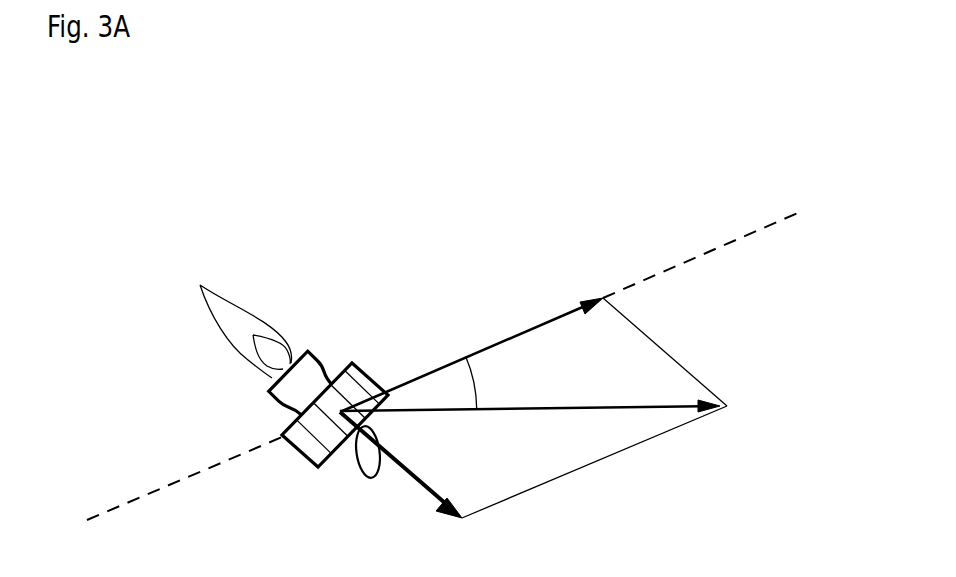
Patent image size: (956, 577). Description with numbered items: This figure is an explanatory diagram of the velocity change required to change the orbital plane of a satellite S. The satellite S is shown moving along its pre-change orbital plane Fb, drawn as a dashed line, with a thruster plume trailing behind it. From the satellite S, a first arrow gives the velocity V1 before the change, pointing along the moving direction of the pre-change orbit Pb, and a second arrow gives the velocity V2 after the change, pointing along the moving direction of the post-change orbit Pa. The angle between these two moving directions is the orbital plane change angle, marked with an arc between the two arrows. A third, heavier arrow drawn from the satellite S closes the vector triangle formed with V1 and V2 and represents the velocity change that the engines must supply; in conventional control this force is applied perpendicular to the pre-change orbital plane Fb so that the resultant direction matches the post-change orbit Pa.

The satellite S is at (357, 383).
The pre-change orbital plane Fb is at (218, 462).
The velocity before the change V1 is at (471, 355).
The velocity after the change V2 is at (530, 387).
The pre-change orbit Pb is at (519, 334).
The post-change orbit Pa is at (628, 407).